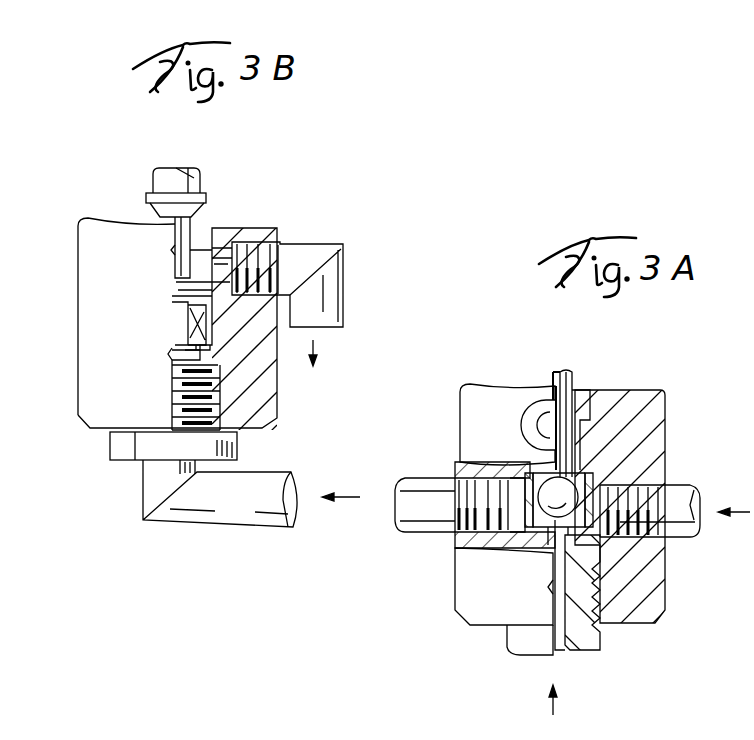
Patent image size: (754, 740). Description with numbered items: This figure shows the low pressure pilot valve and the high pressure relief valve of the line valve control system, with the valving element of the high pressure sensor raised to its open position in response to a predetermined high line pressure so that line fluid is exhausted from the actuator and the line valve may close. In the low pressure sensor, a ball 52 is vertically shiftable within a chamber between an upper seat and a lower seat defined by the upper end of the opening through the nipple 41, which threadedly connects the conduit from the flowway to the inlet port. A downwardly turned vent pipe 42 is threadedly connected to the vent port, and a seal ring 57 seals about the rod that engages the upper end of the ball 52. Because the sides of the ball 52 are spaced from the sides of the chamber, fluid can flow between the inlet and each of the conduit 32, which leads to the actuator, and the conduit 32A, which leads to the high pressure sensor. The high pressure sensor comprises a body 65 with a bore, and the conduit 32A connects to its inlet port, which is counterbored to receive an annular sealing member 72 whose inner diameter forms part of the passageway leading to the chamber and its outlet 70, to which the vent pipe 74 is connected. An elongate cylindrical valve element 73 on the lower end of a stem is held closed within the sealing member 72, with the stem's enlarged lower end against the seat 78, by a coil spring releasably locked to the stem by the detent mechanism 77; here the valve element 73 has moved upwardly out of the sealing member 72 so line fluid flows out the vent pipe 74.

In FIG. 3B, the body 65 is at (279, 411).
In FIG. 3B, the detent mechanism 77 is at (200, 213).
In FIG. 3B, the valve element 73 is at (178, 240).
In FIG. 3B, the outlet 70 is at (228, 283).
In FIG. 3B, the seat 78 is at (184, 297).
In FIG. 3B, the annular sealing member 72 is at (186, 320).
In FIG. 3B, the vent pipe 74 is at (343, 293).
In FIG. 3B, the conduit 32A is at (207, 526).
In FIG. 3A, the conduit 32A is at (413, 531).
In FIG. 3A, the nipple 41 is at (600, 640).
In FIG. 3A, the vent pipe 42 is at (543, 406).
In FIG. 3A, the seal ring 57 is at (590, 392).
In FIG. 3A, the ball 52 is at (566, 494).
In FIG. 3A, the conduit 32 is at (668, 540).